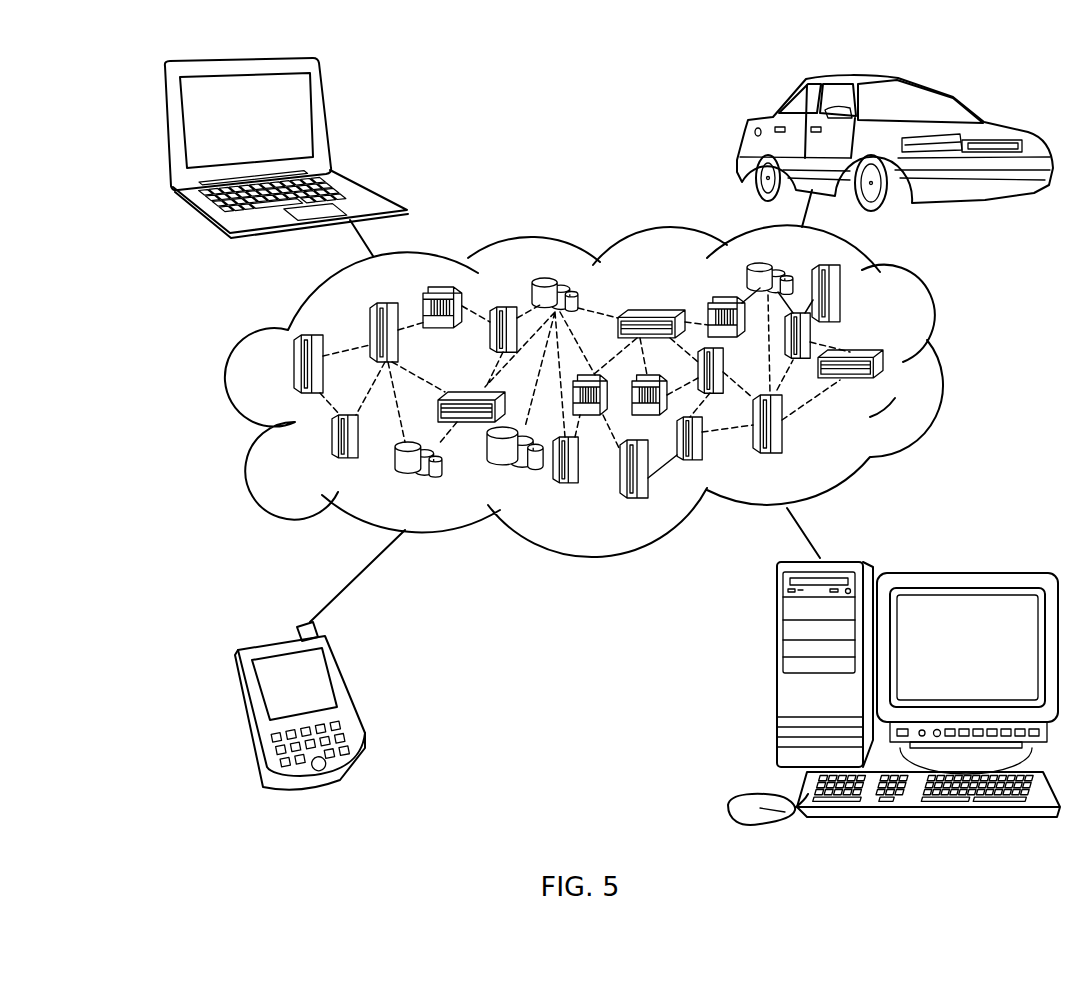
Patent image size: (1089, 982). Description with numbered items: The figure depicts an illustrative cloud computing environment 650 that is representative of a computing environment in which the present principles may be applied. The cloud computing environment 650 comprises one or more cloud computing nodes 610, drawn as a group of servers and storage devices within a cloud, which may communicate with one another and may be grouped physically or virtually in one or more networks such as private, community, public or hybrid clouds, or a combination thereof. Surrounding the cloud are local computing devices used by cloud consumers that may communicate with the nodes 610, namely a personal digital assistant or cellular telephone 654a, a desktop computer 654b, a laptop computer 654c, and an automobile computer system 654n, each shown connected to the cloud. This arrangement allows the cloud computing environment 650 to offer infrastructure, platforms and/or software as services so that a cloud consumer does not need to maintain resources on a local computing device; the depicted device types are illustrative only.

The cloud computing environment 650 is at (930, 303).
The cloud computing nodes 610 is at (902, 385).
The personal digital assistant (PDA) or cellular telephone 654a is at (348, 685).
The desktop computer 654b is at (777, 678).
The laptop computer 654c is at (323, 113).
The automobile computer system 654n is at (752, 122).